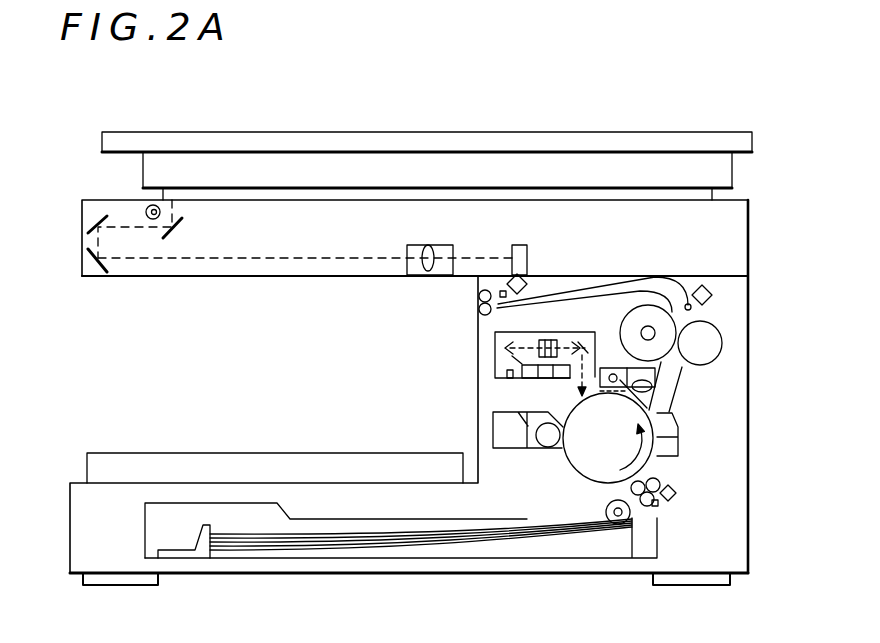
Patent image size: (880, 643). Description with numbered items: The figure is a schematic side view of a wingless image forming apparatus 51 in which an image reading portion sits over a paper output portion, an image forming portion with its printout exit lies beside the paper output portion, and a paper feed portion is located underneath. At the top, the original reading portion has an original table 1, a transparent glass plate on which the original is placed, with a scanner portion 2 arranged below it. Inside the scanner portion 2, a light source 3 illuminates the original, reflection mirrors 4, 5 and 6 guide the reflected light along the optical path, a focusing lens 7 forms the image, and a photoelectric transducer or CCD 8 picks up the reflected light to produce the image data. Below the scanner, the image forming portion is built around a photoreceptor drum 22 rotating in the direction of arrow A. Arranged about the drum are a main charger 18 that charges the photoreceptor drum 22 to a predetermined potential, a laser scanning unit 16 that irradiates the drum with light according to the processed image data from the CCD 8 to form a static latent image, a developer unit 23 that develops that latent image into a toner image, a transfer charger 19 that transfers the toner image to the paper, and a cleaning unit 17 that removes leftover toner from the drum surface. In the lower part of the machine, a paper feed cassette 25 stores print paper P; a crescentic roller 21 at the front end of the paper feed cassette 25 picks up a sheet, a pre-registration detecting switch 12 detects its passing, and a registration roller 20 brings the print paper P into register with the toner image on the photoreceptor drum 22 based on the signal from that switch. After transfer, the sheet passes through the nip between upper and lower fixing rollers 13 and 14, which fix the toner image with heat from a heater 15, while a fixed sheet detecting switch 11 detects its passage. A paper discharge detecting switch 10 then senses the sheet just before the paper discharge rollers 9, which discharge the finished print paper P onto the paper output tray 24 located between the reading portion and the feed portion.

The image forming apparatus 51 is at (419, 130).
The original table 1 is at (532, 168).
The scanner portion 2 is at (82, 258).
The light source 3 is at (143, 207).
The reflection mirror 4 is at (182, 220).
The reflection mirror 5 is at (88, 224).
The reflection mirror 6 is at (100, 278).
The focusing lens 7 is at (405, 248).
The photoelectric transducer (CCD) 8 is at (527, 255).
The paper discharge rollers 9 is at (478, 308).
The paper discharge detecting switch 10 is at (527, 288).
The fixed sheet detecting switch 11 is at (712, 292).
The pre-registration detecting switch 12 is at (673, 498).
The upper fixing roller 13 is at (620, 330).
The lower fixing roller 14 is at (723, 349).
The heater 15 is at (656, 333).
The laser scanning unit (LSU) 16 is at (495, 366).
The cleaning unit 17 is at (653, 378).
The main charger 18 is at (650, 412).
The transfer charger 19 is at (680, 450).
The registration roller 20 is at (663, 477).
The crescentic roller 21 is at (606, 512).
The photoreceptor drum 22 is at (568, 463).
The developer unit 23 is at (493, 435).
The paper output tray 24 is at (100, 465).
The paper feed cassette 25 is at (160, 532).
The print paper P is at (330, 550).